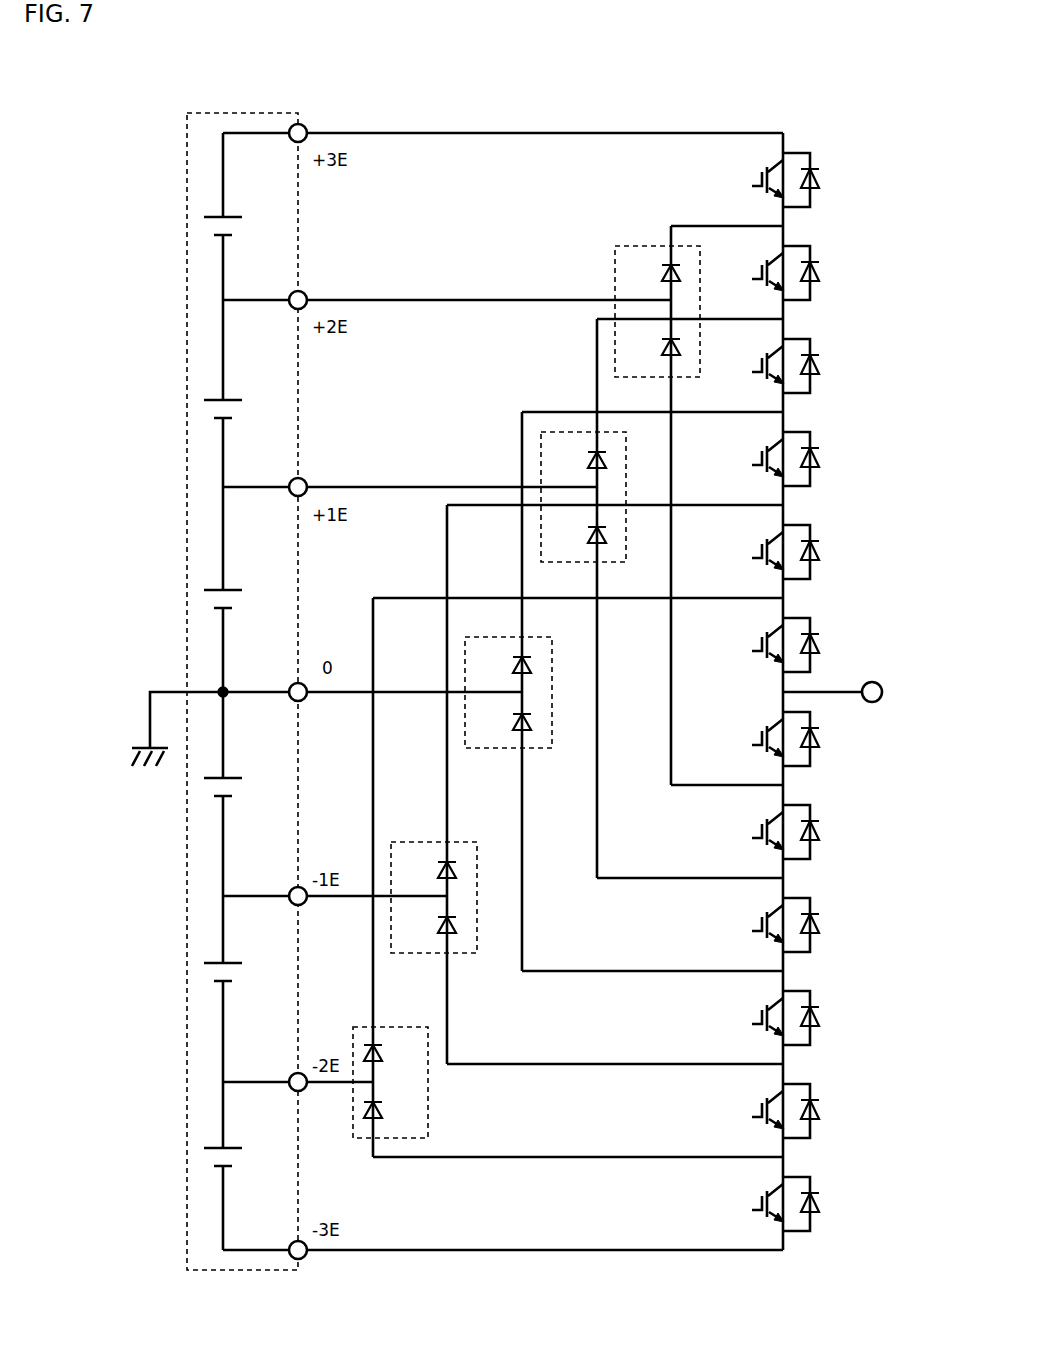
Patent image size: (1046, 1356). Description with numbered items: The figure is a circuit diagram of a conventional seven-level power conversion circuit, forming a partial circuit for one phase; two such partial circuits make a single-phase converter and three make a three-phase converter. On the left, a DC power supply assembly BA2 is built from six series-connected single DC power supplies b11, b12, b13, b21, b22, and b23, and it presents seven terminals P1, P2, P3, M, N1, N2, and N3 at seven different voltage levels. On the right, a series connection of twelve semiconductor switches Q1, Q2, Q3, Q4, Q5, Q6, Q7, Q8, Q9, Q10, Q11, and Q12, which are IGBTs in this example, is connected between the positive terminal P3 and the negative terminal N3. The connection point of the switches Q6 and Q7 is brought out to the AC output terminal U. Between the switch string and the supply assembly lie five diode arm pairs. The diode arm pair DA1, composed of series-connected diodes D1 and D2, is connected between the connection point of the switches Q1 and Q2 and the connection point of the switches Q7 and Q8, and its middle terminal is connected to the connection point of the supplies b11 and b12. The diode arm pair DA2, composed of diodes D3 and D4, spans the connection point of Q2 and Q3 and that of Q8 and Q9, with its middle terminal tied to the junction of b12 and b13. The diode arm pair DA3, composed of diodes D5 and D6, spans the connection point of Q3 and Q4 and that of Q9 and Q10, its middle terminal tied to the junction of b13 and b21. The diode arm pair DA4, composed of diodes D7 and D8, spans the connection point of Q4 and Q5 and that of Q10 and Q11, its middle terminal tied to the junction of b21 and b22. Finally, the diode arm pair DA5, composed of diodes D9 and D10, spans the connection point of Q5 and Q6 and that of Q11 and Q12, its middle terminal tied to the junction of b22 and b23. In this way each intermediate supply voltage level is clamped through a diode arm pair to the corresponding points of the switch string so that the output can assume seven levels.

The DC power supply assembly BA2 is at (219, 691).
The single DC power supply b11 is at (238, 216).
The single DC power supply b12 is at (238, 393).
The single DC power supply b13 is at (238, 589).
The single DC power supply b21 is at (238, 794).
The single DC power supply b22 is at (238, 989).
The single DC power supply b23 is at (238, 1166).
The positive terminal P3 is at (503, 126).
The terminal P2 is at (447, 293).
The terminal P1 is at (410, 479).
The terminal M is at (372, 705).
The terminal N1 is at (335, 908).
The terminal N2 is at (298, 1095).
The negative terminal N3 is at (503, 1264).
The AC output terminal U is at (844, 693).
The diode arm pair DA1 is at (657, 504).
The diode arm pair DA2 is at (551, 598).
The diode arm pair DA3 is at (508, 691).
The diode arm pair DA4 is at (434, 784).
The diode arm pair DA5 is at (390, 877).
The diode D1 is at (655, 276).
The diode D2 is at (655, 352).
The diode D3 is at (580, 464).
The diode D4 is at (580, 539).
The diode D5 is at (505, 669).
The diode D6 is at (505, 726).
The diode D7 is at (430, 872).
The diode D8 is at (430, 931).
The diode D9 is at (393, 1054).
The diode D10 is at (395, 1112).
The semiconductor switch Q1 is at (806, 180).
The semiconductor switch Q2 is at (806, 273).
The semiconductor switch Q3 is at (806, 366).
The semiconductor switch Q4 is at (806, 459).
The semiconductor switch Q5 is at (806, 552).
The semiconductor switch Q6 is at (806, 645).
The semiconductor switch Q7 is at (806, 739).
The semiconductor switch Q8 is at (806, 832).
The semiconductor switch Q9 is at (806, 925).
The semiconductor switch Q10 is at (812, 1018).
The semiconductor switch Q11 is at (812, 1111).
The semiconductor switch Q12 is at (812, 1204).